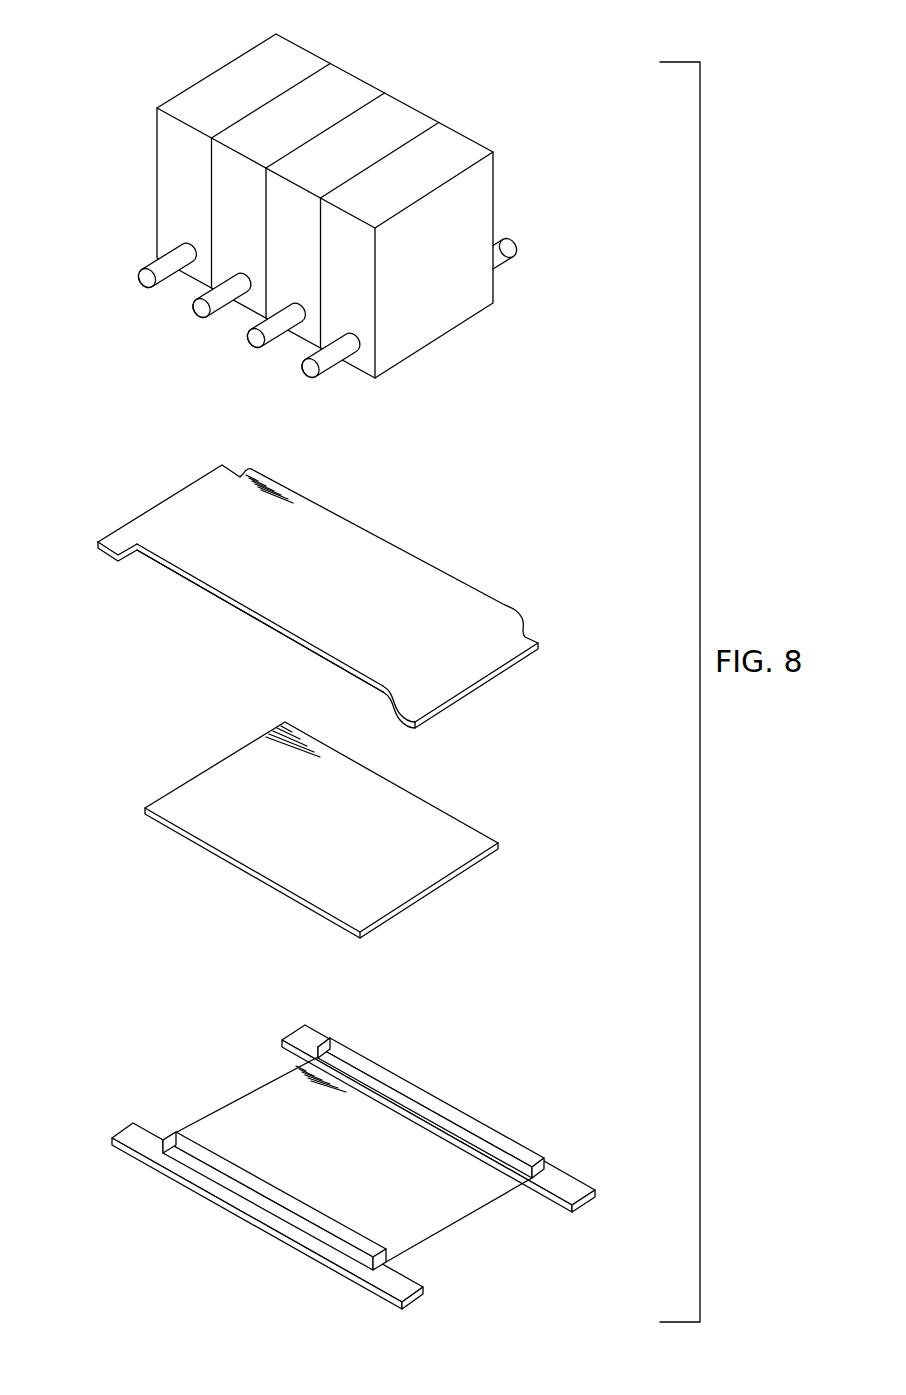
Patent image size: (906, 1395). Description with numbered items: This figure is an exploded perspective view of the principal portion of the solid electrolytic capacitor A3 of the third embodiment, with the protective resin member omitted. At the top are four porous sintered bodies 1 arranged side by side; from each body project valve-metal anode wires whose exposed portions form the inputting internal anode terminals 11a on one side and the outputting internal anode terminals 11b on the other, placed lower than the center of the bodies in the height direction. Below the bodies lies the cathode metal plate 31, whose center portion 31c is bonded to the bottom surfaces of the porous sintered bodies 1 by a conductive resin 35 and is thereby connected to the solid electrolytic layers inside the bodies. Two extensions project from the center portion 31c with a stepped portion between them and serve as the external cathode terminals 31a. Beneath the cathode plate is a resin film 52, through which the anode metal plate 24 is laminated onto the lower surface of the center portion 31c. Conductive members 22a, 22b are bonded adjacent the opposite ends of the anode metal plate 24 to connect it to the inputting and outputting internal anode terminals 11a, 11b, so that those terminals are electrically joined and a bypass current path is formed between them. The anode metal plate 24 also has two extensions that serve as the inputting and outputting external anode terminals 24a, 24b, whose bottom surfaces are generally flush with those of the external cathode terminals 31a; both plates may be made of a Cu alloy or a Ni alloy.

The solid electrolytic capacitor A3 is at (135, 132).
The porous sintered body 1 is at (208, 102).
The conductive resin 35 is at (258, 62).
The inputting internal anode terminal 11a is at (300, 373).
The outputting internal anode terminal 11b is at (506, 246).
The cathode metal plate 31 is at (415, 578).
The external cathode terminal 31a is at (110, 538).
The center portion 31c is at (283, 603).
The resin film 52 is at (237, 815).
The anode metal plate 24 is at (243, 1100).
The inputting external anode terminal 24a is at (132, 1127).
The outputting external anode terminal 24b is at (300, 1028).
The conductive member 22a is at (268, 1217).
The conductive member 22b is at (443, 1098).